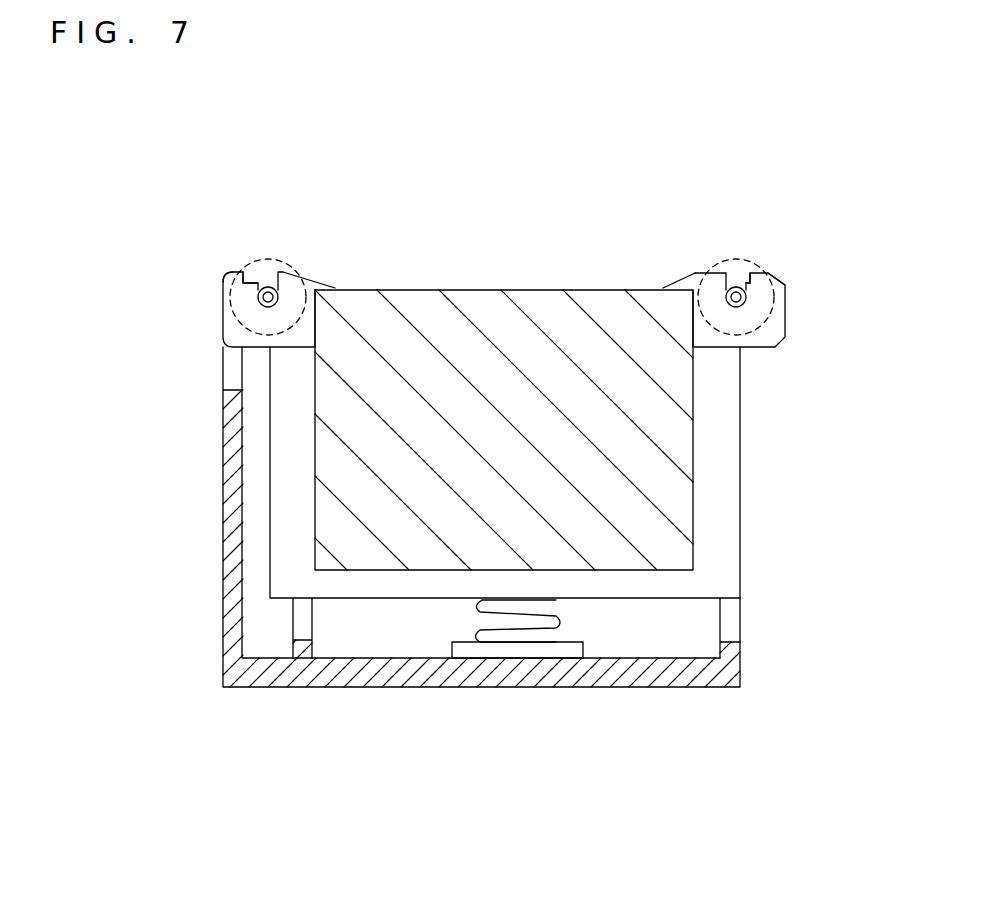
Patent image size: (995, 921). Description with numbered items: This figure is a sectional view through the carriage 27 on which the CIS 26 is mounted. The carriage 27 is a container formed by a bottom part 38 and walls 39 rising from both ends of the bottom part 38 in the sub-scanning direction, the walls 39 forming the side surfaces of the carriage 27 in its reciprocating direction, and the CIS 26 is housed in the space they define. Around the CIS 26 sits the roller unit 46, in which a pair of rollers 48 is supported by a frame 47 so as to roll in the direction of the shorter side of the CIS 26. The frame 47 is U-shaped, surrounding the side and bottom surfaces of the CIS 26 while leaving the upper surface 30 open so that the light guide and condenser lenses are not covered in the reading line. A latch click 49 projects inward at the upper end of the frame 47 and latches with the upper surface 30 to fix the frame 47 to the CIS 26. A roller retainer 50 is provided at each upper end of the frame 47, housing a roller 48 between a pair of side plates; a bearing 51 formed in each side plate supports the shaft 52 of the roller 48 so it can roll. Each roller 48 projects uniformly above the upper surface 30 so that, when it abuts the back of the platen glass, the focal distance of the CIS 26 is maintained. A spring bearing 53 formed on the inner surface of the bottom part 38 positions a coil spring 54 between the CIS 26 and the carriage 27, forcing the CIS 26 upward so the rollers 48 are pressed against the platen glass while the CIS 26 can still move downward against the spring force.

The CIS 26 is at (501, 367).
The carriage 27 is at (482, 570).
The upper surface 30 is at (529, 290).
The bottom part 38 is at (508, 688).
The wall 39 is at (223, 523).
The roller unit 46 is at (501, 386).
The frame 47 is at (740, 445).
The roller 48 is at (253, 276).
The latch click 49 is at (333, 286).
The roller retainer 50 is at (497, 261).
The bearing 51 is at (233, 273).
The shaft 52 is at (268, 286).
The spring bearing 53 is at (585, 650).
The coil spring 54 is at (478, 605).